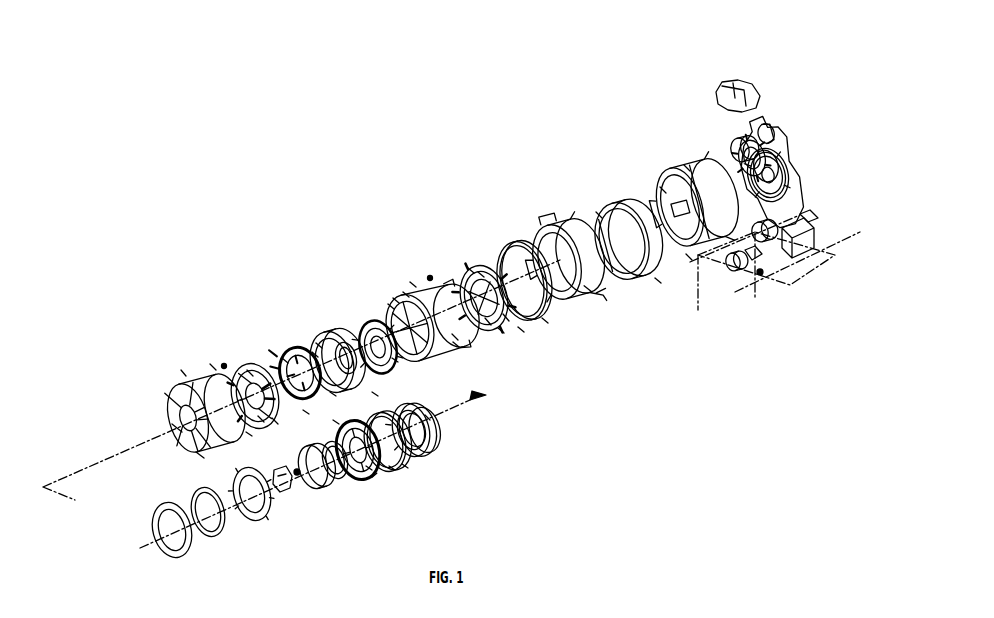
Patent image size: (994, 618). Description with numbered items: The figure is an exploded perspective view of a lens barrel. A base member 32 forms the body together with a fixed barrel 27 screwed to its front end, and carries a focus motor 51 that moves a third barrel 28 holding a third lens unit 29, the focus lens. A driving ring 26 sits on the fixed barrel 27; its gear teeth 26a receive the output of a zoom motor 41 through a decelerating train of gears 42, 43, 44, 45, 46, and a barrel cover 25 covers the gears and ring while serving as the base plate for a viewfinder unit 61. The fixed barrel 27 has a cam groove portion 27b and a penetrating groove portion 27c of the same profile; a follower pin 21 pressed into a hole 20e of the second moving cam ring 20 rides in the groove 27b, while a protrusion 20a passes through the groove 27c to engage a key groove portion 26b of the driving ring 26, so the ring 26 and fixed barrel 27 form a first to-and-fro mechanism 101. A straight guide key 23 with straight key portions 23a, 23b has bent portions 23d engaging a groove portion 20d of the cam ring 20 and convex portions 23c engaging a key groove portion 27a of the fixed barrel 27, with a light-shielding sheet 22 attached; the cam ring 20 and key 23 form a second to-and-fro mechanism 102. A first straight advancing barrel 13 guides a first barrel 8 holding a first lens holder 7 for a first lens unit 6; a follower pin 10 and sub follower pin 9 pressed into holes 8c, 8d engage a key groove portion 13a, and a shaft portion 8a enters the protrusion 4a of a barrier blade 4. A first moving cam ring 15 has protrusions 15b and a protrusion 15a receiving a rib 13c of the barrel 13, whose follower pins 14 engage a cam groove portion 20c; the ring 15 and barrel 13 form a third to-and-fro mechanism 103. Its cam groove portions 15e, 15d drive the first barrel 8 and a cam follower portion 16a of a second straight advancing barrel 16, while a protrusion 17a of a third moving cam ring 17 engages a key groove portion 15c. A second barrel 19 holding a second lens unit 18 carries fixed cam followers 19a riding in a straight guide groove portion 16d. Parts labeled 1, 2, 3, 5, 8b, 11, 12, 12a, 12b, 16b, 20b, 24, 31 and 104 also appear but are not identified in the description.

The first lens 1 is at (178, 560).
The second lens 2 is at (215, 538).
The lens holding ring 3 is at (265, 518).
The barrier blade 4 is at (298, 478).
The protrusion 4a is at (287, 494).
The lens 5 is at (320, 490).
The first lens unit 6 is at (340, 480).
The first lens holder 7 is at (356, 481).
The first barrel 8 is at (380, 474).
The shaft portion 8a is at (336, 421).
The portion of lens holding frame 8b is at (370, 470).
The hole 8c is at (406, 468).
The hole 8d is at (393, 470).
The sub follower pin 9 is at (413, 458).
The follower pin 10 is at (427, 455).
The cover ring 11 is at (434, 448).
The lens frame 12 is at (414, 418).
The portion of lens frame 12a is at (430, 420).
The portion of lens frame 12b is at (248, 433).
The first straight advancing barrel 13 is at (172, 405).
The key groove portion 13a is at (174, 428).
The rib 13c is at (184, 467).
The follower pin 14 is at (213, 367).
The first moving cam ring 15 is at (240, 372).
The protrusion 15a is at (320, 414).
The protrusions 15b is at (250, 372).
The key groove portion 15c is at (223, 365).
The cam groove portion 15d is at (262, 420).
The cam groove portion 15e is at (275, 419).
The second straight advancing barrel 16 is at (284, 352).
The cam follower portion 16a is at (284, 360).
The portion of drive ring 16b is at (333, 394).
The straight guide groove portion 16d is at (315, 355).
The third moving cam ring 17 is at (320, 335).
The protrusion 17a is at (318, 345).
The second lens unit 18 is at (340, 336).
The second barrel 19 is at (368, 325).
The fixed cam followers 19a is at (395, 360).
The second moving cam ring 20 is at (400, 300).
The protrusion 20a is at (412, 285).
The portion of lens barrel 20b is at (395, 300).
The cam groove portion 20c is at (390, 305).
The groove portion 20d is at (405, 295).
The hole 20e is at (455, 345).
The follower pin 21 is at (506, 318).
The light-shielding sheet 22 is at (430, 277).
The straight guide key 23 is at (470, 280).
The straight key portion 23a is at (500, 330).
The straight key portion 23b is at (520, 330).
The convex portions 23c is at (545, 320).
The bent portions 23d is at (480, 275).
The ring 24 is at (510, 258).
The barrel cover 25 is at (540, 230).
The driving ring 26 is at (612, 210).
The gear teeth 26a is at (658, 282).
The key groove portion 26b is at (598, 215).
The fixed barrel 27 is at (668, 168).
The key groove portion 27a is at (689, 257).
The cam groove portion 27b is at (663, 190).
The penetrating groove portion 27c is at (692, 165).
The third barrel 28 is at (800, 160).
The third lens unit 29 is at (792, 183).
The gear unit 31 is at (760, 130).
The base member 32 is at (774, 150).
The zoom motor 41 is at (730, 270).
The gear 42 is at (750, 260).
The gear 43 is at (762, 273).
The gear 44 is at (770, 242).
The gear 45 is at (802, 256).
The gear 46 is at (810, 224).
The focus motor 51 is at (730, 140).
The viewfinder unit 61 is at (716, 90).
The first to-and-fro mechanism 101 is at (563, 120).
The second to-and-fro mechanism 102 is at (352, 222).
The third to-and-fro mechanism 103 is at (120, 350).
The lens unit 104 is at (265, 278).